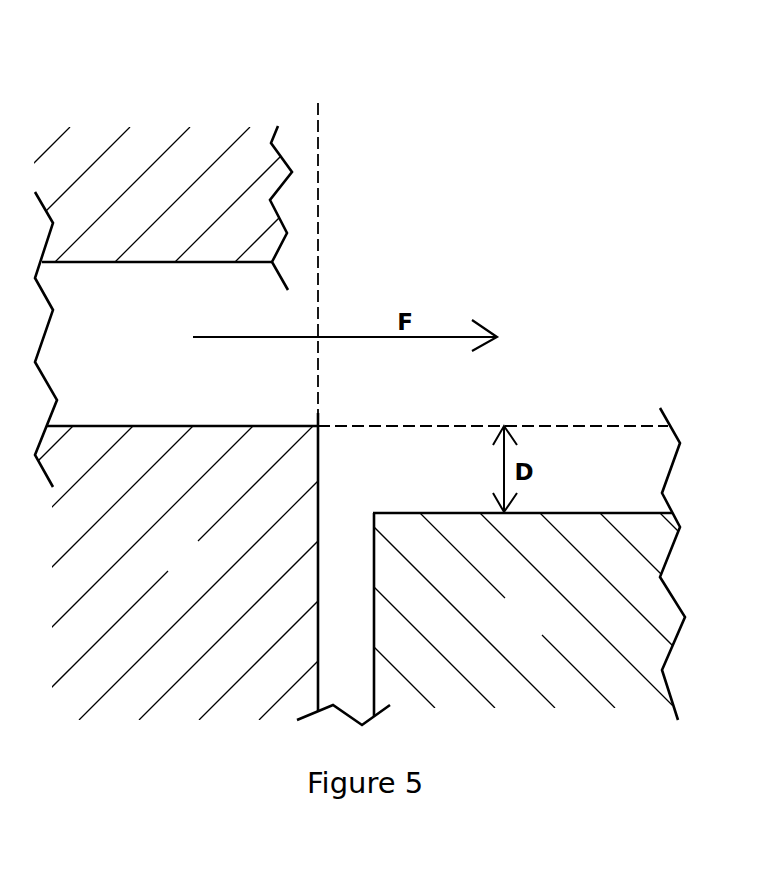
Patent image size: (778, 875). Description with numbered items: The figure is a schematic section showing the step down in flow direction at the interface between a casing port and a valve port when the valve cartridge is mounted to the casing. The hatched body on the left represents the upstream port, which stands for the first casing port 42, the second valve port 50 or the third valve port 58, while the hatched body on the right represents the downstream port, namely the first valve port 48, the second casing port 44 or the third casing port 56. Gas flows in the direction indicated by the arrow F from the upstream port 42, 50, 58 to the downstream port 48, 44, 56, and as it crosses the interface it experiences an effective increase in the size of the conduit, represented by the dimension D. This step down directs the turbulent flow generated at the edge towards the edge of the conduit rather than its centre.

The first casing port 42 is at (194, 532).
The second valve port 50 is at (194, 560).
The third valve port 58 is at (194, 588).
The first valve port 48 is at (538, 600).
The second casing port 44 is at (538, 628).
The third casing port 56 is at (538, 655).